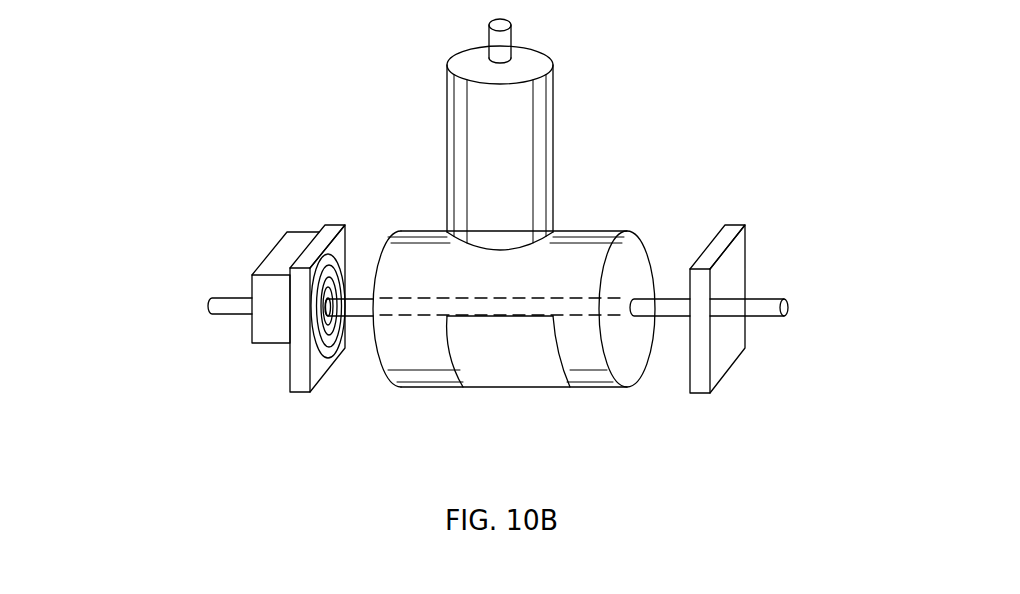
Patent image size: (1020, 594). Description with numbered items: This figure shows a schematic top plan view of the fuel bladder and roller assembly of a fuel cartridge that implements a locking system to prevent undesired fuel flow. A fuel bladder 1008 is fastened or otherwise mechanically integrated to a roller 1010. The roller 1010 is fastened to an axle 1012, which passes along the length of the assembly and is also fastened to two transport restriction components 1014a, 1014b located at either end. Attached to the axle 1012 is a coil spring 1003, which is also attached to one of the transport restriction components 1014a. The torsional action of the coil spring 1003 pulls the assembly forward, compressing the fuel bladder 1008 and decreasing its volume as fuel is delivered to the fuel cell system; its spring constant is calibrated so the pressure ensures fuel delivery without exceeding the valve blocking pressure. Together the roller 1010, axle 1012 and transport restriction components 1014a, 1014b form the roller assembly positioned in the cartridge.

The fuel bladder 1008 is at (553, 115).
The roller 1010 is at (627, 367).
The coil spring 1003 is at (338, 280).
The axle 1012 is at (231, 297).
The transport restriction component 1014a is at (320, 365).
The transport restriction component 1014b is at (718, 366).